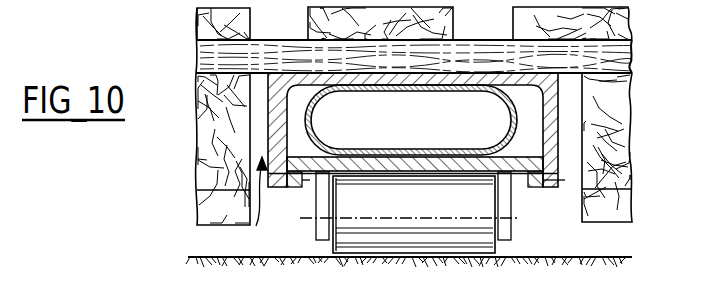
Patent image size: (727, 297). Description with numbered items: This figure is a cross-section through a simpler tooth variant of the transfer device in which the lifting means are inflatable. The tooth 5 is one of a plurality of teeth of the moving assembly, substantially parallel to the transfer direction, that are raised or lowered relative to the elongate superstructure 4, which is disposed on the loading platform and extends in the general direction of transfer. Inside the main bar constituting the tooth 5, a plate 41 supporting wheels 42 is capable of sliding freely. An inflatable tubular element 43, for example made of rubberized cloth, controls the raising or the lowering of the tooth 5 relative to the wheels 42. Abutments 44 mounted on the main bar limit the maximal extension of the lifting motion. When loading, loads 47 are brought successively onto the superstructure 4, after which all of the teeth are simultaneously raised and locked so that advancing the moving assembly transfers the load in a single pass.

The load 47 is at (632, 40).
The inflatable tubular element 43 is at (302, 143).
The plate 41 is at (520, 182).
The abutment 44 is at (332, 217).
The wheel 42 is at (497, 250).
The tooth 5 is at (256, 205).
The elongate superstructure 4 is at (613, 257).